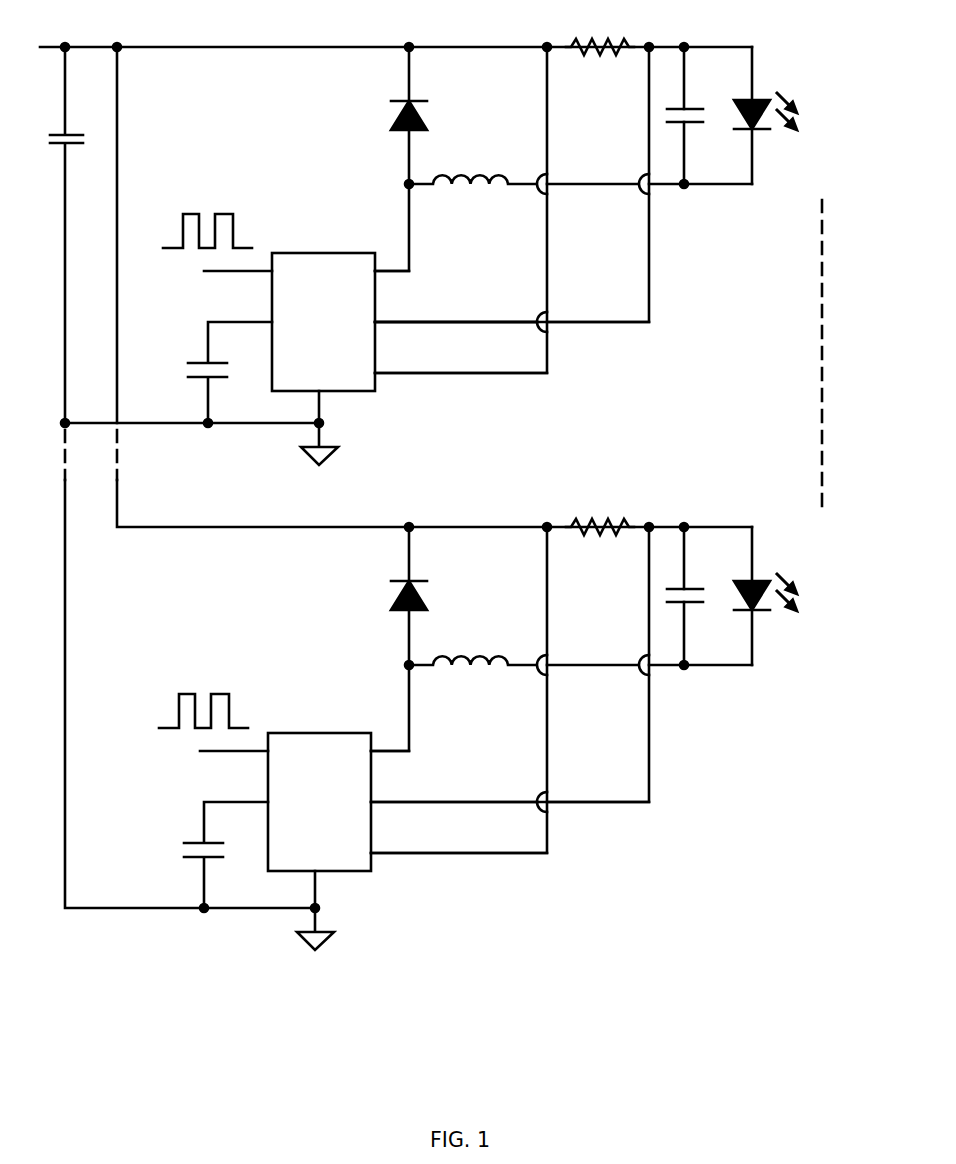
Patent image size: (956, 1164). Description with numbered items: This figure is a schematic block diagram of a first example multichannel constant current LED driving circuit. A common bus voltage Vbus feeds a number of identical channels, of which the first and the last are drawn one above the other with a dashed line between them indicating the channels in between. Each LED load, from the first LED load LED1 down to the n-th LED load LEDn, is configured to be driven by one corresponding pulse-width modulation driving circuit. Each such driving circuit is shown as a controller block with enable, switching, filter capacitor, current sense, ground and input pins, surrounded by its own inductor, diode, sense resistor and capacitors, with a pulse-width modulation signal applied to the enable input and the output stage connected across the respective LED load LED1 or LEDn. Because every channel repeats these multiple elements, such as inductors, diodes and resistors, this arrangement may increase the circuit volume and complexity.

The bus voltage Vbus is at (396, 33).
The first LED load LED1 is at (797, 112).
The n-th LED load LEDn is at (797, 594).